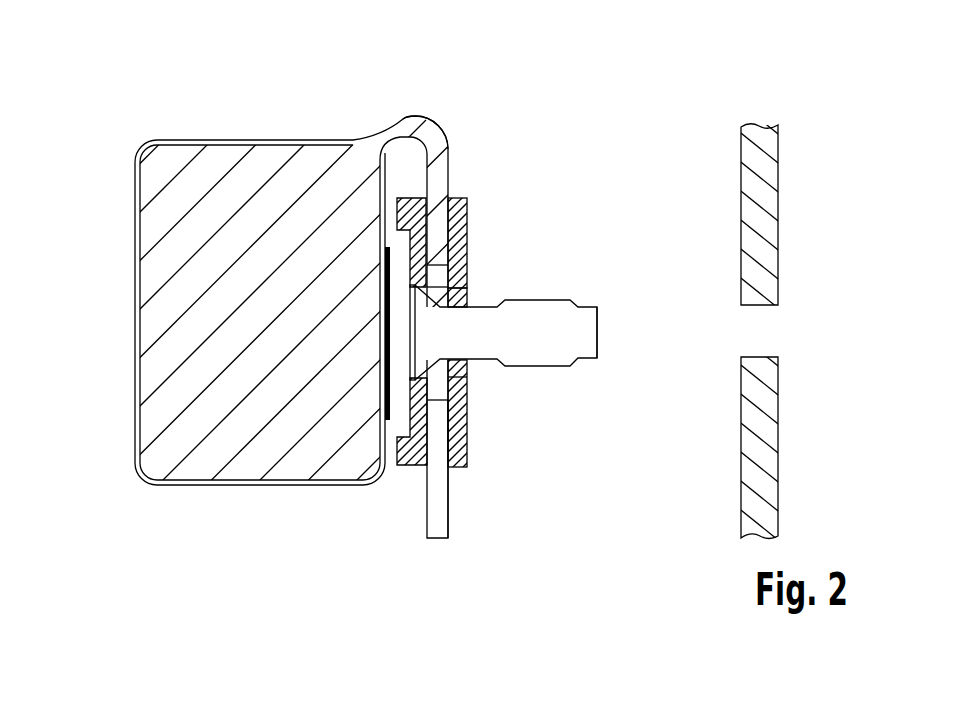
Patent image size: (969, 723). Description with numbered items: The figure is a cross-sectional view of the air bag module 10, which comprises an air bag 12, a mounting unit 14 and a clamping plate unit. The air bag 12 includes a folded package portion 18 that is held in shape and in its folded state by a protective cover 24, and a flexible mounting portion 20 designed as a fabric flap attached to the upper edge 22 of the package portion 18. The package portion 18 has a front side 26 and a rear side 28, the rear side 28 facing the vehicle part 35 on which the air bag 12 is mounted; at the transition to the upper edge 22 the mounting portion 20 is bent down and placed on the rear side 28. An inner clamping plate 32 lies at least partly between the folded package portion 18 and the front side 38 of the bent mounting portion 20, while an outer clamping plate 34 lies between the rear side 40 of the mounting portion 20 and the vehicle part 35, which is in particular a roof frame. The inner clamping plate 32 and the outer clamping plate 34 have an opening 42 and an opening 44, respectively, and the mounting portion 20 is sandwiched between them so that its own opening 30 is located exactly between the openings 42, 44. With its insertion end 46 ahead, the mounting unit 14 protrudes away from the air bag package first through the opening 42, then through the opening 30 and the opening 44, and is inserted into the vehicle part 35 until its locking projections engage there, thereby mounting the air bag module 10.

The air bag module 10 is at (605, 88).
The air bag 12 is at (195, 126).
The mounting unit 14 is at (541, 368).
The package portion 18 is at (170, 402).
The mounting portion 20 is at (450, 167).
The upper edge 22 is at (415, 120).
The protective cover 24 is at (272, 140).
The front side 26 is at (112, 280).
The rear side 28 is at (630, 305).
The opening 30 is at (440, 392).
The inner clamping plate 32 is at (402, 468).
The outer clamping plate 34 is at (463, 460).
The vehicle part 35 is at (772, 208).
The front side 38 is at (427, 518).
The rear side 40 is at (449, 500).
The opening 42 is at (464, 254).
The opening 44 is at (460, 298).
The insertion end 46 is at (590, 342).